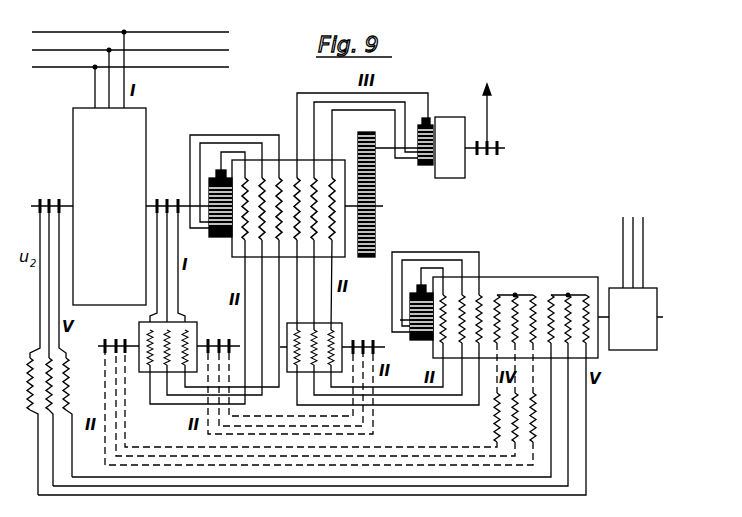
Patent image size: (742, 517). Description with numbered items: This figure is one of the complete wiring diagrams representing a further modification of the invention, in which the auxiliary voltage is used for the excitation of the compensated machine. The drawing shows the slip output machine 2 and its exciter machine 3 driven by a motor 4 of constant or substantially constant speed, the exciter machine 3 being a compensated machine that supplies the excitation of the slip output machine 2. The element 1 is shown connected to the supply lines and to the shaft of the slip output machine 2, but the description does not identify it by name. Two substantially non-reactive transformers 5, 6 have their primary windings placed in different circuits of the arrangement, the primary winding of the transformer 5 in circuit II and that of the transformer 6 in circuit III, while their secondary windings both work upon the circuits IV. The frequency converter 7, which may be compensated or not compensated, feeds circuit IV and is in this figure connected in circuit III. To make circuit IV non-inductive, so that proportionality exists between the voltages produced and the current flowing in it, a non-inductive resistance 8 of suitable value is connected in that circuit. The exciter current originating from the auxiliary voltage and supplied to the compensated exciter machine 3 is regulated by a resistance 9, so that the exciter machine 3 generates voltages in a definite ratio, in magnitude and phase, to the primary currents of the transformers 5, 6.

The main electric machine 1 is at (143, 126).
The slip output machine 2 is at (233, 250).
The exciter machine 3 is at (522, 282).
The motor 4 is at (640, 348).
The transformer 5 is at (198, 329).
The transformer 6 is at (338, 331).
The frequency converter 7 is at (451, 124).
The non-inductive resistance 8 is at (494, 420).
The resistance 9 is at (67, 392).